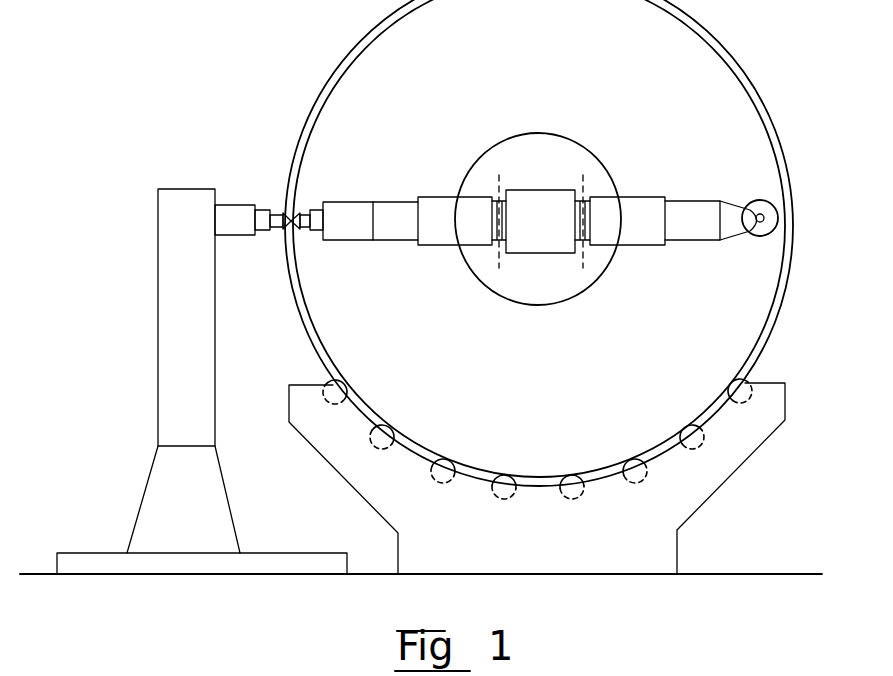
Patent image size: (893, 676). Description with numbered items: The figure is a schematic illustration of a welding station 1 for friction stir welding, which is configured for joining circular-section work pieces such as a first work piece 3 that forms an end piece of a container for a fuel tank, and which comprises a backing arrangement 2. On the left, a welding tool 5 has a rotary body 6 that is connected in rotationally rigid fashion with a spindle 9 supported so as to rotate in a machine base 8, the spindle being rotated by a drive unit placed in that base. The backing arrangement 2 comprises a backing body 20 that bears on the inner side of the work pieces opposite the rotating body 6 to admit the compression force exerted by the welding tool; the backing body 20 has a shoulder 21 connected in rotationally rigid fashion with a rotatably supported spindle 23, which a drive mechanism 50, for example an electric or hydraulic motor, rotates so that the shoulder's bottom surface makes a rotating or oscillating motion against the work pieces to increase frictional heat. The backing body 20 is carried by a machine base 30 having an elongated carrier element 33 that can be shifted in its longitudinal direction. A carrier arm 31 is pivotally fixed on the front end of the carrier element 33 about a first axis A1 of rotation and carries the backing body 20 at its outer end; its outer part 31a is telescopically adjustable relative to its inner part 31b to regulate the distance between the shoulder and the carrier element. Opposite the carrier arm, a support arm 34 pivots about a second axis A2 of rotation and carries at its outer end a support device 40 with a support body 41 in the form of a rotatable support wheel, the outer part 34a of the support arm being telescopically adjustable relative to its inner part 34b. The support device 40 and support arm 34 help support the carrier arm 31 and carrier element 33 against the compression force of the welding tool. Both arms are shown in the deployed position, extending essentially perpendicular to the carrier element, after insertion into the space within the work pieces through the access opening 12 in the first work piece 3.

The welding station 1 is at (249, 53).
The backing arrangement 2 is at (419, 139).
The first work piece 3 is at (350, 58).
The welding tool 5 is at (266, 186).
The rotary body 6 is at (278, 230).
The machine base 8 is at (158, 268).
The spindle 9 is at (262, 233).
The access opening 12 is at (535, 143).
The backing body 20 is at (309, 200).
The shoulder 21 is at (300, 228).
The spindle 23 is at (328, 241).
The machine base 30 is at (556, 172).
The carrier arm 31 is at (434, 191).
The outer part of carrier arm 31a is at (385, 243).
The inner part of carrier arm 31b is at (442, 248).
The carrier element 33 is at (538, 249).
The support arm 34 is at (643, 191).
The outer part of support arm 34a is at (699, 243).
The inner part of support arm 34b is at (637, 248).
The support device 40 is at (741, 186).
The support body 41 is at (763, 242).
The drive mechanism 50 is at (350, 212).
The first axis of rotation A1 is at (497, 270).
The second axis of rotation A2 is at (580, 268).